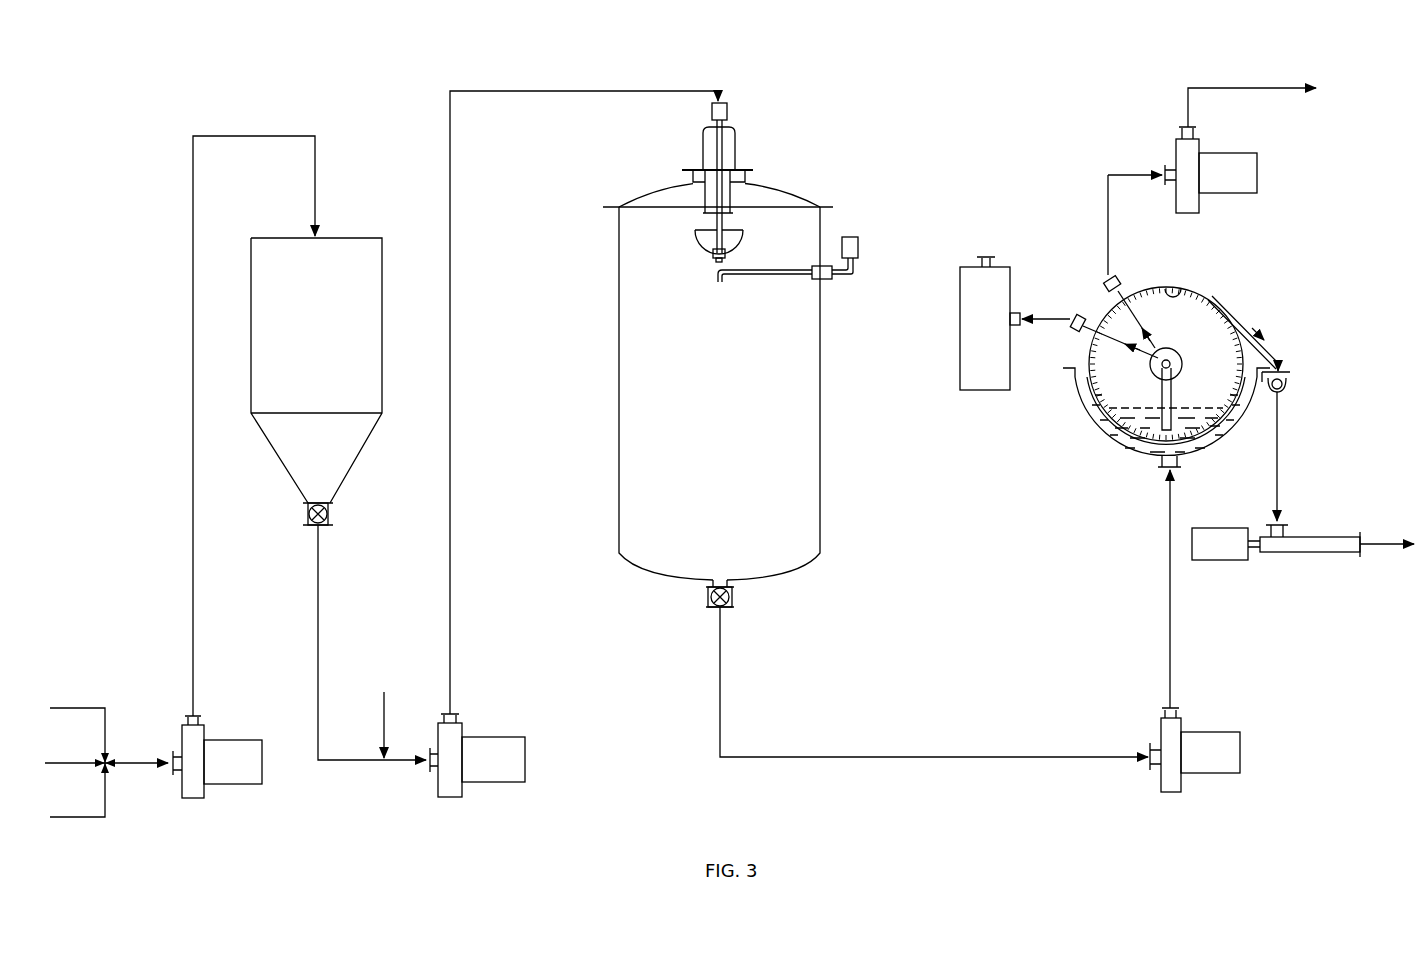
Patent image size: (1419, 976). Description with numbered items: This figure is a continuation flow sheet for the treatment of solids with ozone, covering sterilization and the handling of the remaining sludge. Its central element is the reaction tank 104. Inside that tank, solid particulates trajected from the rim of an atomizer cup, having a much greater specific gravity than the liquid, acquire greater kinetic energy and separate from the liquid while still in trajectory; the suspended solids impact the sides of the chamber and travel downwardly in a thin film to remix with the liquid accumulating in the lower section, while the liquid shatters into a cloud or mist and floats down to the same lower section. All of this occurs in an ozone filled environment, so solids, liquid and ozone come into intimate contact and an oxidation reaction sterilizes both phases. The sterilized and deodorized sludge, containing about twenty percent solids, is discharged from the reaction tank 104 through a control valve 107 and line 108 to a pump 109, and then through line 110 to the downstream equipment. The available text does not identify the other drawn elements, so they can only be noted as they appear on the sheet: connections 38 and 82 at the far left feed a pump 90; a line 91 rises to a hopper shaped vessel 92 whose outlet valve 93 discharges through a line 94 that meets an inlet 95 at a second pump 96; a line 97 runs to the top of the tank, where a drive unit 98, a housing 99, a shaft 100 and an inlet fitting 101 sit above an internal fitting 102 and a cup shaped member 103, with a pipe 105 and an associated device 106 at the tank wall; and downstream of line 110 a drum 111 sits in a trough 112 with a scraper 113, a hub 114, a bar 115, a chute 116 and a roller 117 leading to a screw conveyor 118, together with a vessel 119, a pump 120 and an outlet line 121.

The inlet line from reactor 38 is at (78, 708).
The inlet line 82 is at (75, 817).
The pump 90 is at (196, 790).
The line 91 is at (192, 418).
The hopper 92 is at (335, 250).
The valve 93 is at (330, 516).
The line 94 is at (319, 621).
The inlet line 95 is at (384, 706).
The pump 96 is at (450, 790).
The line 97 is at (451, 412).
The motor 98 is at (728, 110).
The housing 99 is at (735, 142).
The shaft 100 is at (716, 148).
The inlet nozzle 101 is at (733, 192).
The fitting 102 is at (712, 258).
The distributor bowl 103 is at (695, 240).
The reaction tank 104 is at (821, 412).
The pipe 105 is at (792, 278).
The pressure device 106 is at (850, 237).
The control valve 107 is at (733, 598).
The line 108 is at (868, 752).
The pump 109 is at (1172, 786).
The line 110 is at (1168, 604).
The drum filter 111 is at (1120, 388).
The trough 112 is at (1122, 445).
The scraper 113 is at (1163, 293).
The hub 114 is at (1174, 350).
The bar 115 is at (1172, 396).
The chute 116 is at (1228, 318).
The roller 117 is at (1284, 380).
The screw conveyor 118 is at (1292, 546).
The tank 119 is at (993, 392).
The pump 120 is at (1193, 205).
The outlet line 121 is at (1245, 88).